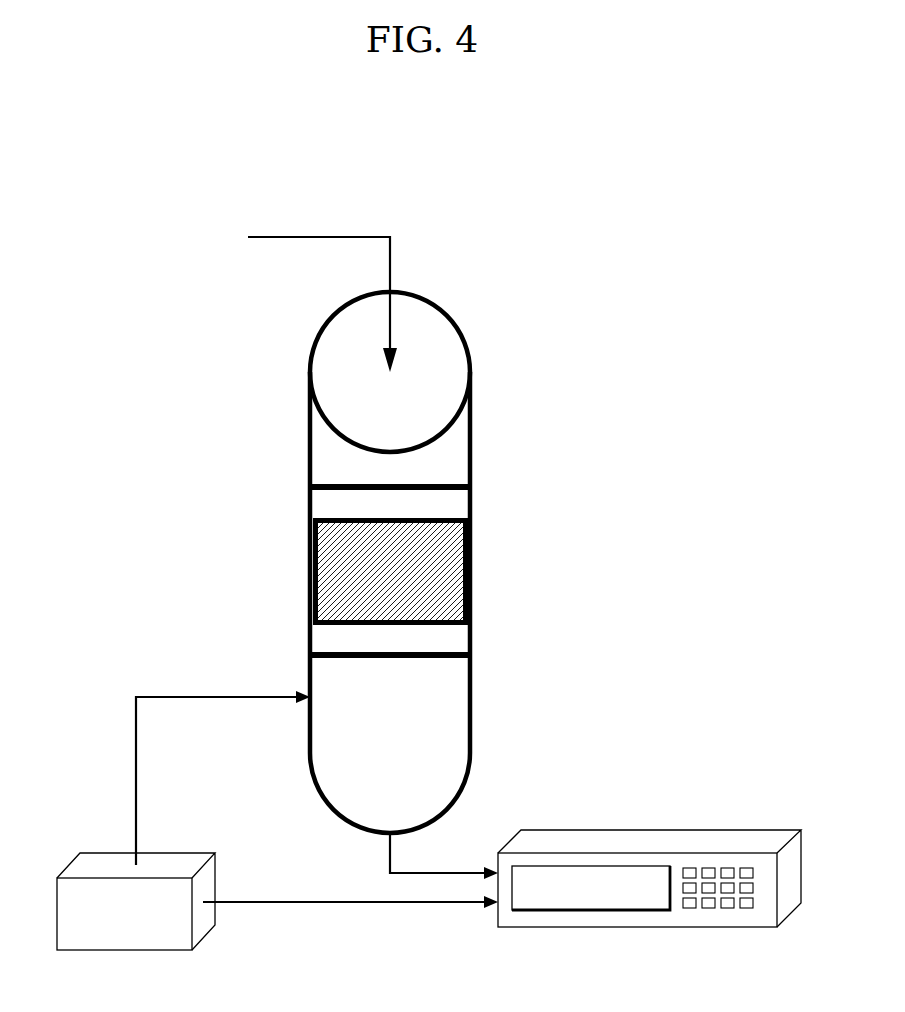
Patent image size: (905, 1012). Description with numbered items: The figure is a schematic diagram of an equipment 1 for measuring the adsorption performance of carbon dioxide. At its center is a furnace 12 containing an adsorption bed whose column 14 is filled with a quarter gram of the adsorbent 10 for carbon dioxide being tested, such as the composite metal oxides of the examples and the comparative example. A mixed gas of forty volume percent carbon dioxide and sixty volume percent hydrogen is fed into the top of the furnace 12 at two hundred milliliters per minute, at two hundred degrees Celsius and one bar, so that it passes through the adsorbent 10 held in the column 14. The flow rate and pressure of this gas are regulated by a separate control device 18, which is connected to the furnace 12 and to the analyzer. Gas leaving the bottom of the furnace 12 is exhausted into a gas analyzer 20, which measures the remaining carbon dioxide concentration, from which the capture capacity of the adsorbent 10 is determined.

The equipment for measuring adsorption performance of carbon dioxide 1 is at (429, 588).
The adsorbent for carbon dioxide 10 is at (456, 562).
The furnace 12 is at (472, 432).
The column 14 is at (340, 489).
The control device 18 is at (127, 950).
The gas analyzer 20 is at (637, 927).